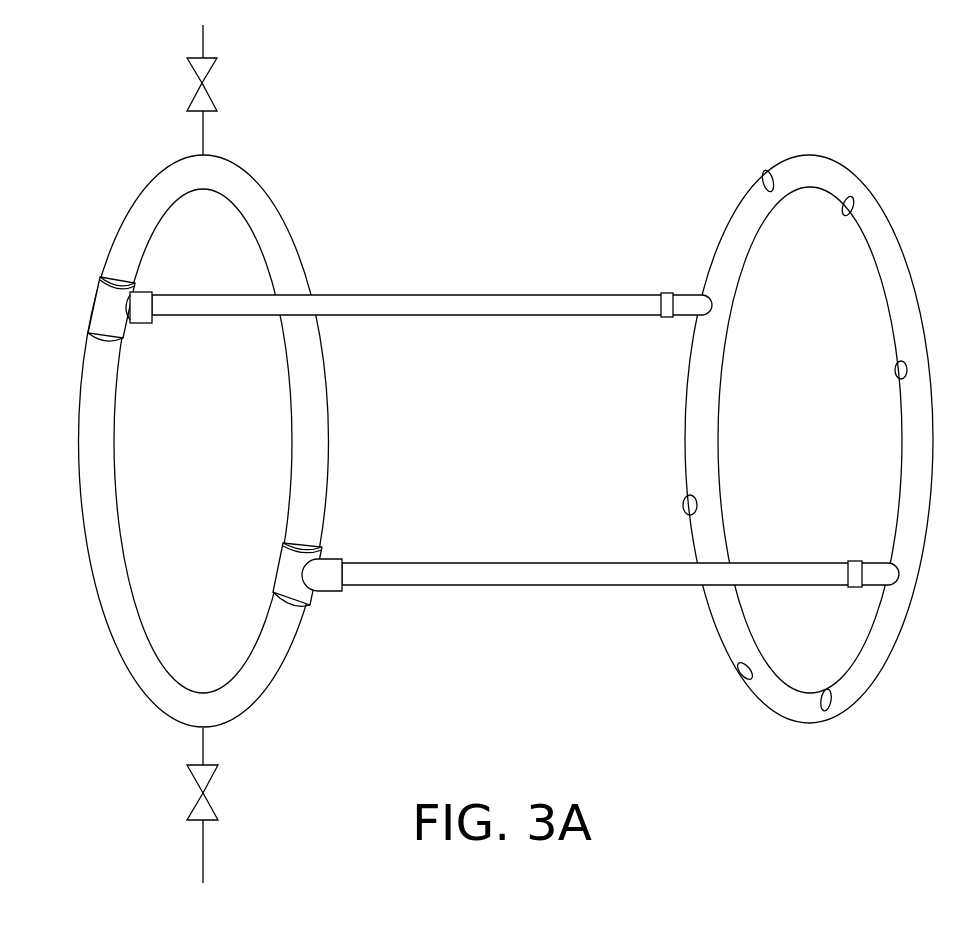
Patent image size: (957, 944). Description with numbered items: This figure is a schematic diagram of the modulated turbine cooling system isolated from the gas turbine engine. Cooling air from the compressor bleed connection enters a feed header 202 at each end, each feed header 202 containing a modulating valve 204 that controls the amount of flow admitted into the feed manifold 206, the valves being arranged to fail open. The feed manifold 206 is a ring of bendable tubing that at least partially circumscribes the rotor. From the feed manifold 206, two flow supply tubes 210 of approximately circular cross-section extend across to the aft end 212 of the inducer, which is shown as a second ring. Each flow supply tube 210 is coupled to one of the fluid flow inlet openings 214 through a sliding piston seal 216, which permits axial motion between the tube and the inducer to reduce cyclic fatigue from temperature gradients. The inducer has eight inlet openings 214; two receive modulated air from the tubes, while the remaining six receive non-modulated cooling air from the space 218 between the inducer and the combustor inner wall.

The feed header 202 is at (203, 40).
The modulating valve 204 is at (212, 96).
The feed manifold 206 is at (306, 452).
The flow supply tube 210 is at (378, 293).
The aft end of inducer 212 is at (826, 157).
The fluid flow inlet openings 214 is at (765, 176).
The sliding piston seal 216 is at (668, 317).
The space 218 is at (573, 446).